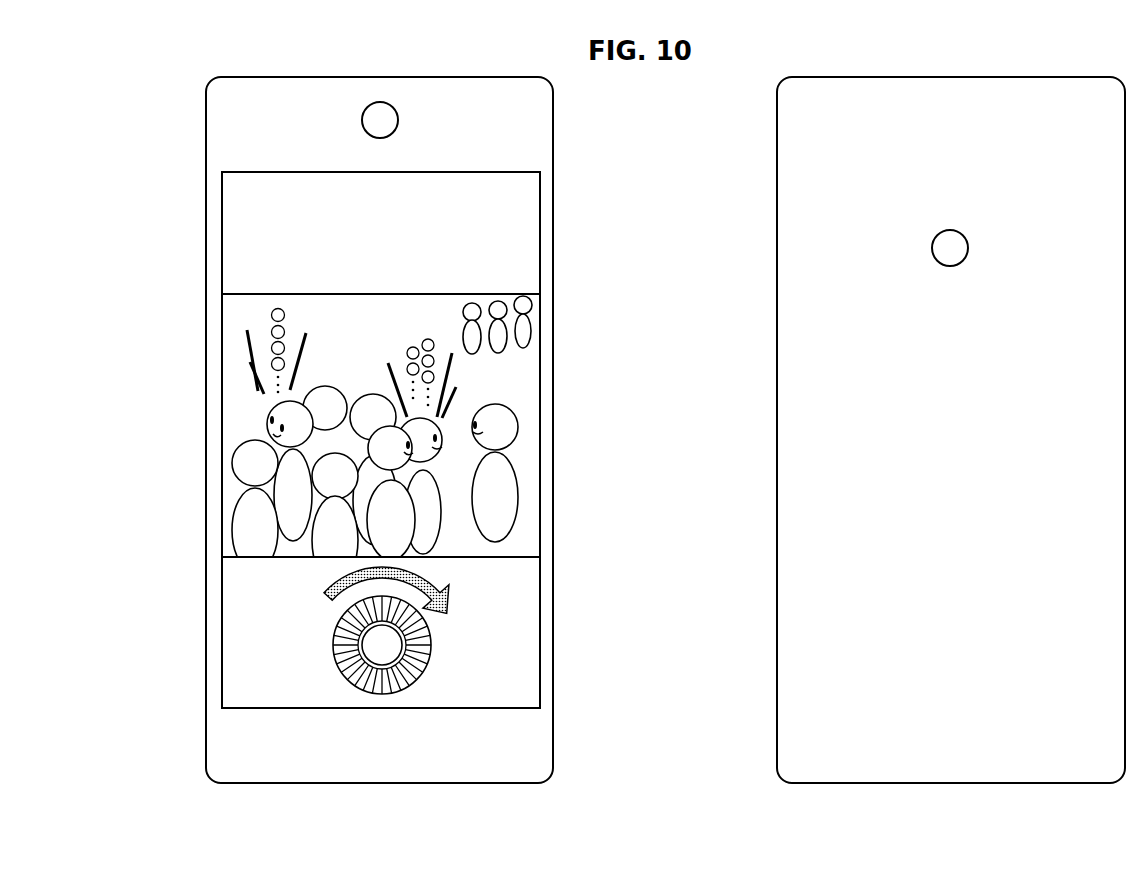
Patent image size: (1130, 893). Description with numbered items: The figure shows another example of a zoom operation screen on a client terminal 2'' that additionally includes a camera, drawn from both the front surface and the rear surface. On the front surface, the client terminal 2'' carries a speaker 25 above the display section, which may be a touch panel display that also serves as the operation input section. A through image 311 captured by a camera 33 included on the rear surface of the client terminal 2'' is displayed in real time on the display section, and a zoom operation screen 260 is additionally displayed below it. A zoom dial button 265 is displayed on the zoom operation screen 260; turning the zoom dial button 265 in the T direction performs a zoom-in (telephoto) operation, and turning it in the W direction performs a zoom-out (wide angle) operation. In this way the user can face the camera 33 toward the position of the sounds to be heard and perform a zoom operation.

The client terminal 2'' is at (665, 422).
The speaker 25 is at (379, 101).
The through image 311 is at (531, 429).
The zoom operation screen 260 is at (527, 603).
The zoom dial button 265 is at (432, 655).
The camera 33 is at (932, 248).